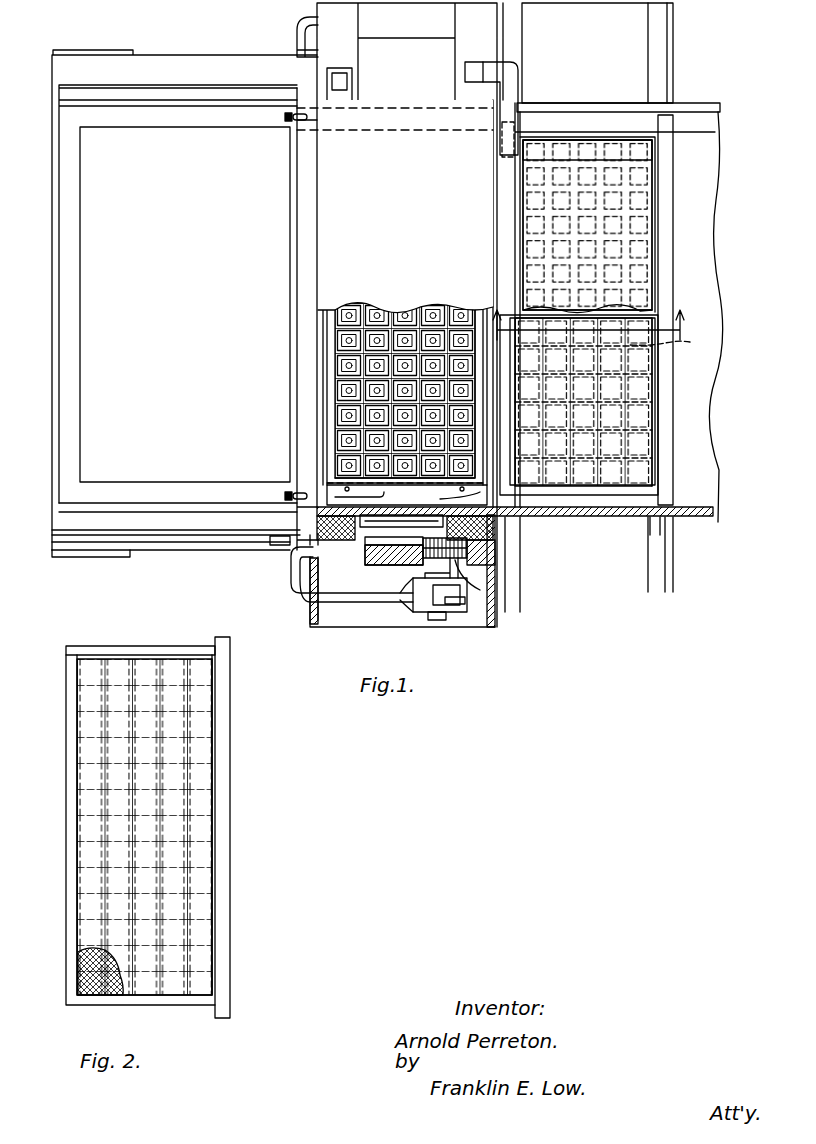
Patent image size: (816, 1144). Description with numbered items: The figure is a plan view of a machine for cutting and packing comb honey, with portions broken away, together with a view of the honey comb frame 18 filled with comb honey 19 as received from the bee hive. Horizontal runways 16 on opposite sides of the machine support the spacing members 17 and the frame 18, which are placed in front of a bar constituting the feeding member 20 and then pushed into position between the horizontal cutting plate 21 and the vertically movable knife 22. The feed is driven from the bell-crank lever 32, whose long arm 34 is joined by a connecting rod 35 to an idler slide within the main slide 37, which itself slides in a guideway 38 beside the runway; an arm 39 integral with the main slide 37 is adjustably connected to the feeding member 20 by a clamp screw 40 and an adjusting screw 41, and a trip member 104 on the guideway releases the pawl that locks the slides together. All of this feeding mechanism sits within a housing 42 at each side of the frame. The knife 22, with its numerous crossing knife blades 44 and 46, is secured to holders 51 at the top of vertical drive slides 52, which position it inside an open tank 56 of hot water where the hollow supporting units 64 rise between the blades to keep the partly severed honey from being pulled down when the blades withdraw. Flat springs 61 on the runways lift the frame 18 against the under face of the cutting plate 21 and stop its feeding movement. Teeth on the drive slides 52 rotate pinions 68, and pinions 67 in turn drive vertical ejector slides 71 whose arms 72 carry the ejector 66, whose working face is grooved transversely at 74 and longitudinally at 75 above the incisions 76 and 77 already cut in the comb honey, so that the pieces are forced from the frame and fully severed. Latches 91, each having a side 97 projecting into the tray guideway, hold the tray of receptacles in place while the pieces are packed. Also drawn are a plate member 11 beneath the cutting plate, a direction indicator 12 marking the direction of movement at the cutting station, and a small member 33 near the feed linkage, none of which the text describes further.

In FIG. 1, the plate 11 is at (492, 548).
In FIG. 1, the air flow direction 12 is at (604, 326).
In FIG. 1, the horizontal runways 16 is at (218, 133).
In FIG. 1, the spacing members 17 is at (515, 502).
In FIG. 1, the honey comb frame 18 is at (665, 365).
In FIG. 2, the honey comb frame 18 is at (220, 812).
In FIG. 1, the comb honey 19 is at (640, 418).
In FIG. 2, the comb honey 19 is at (85, 825).
In FIG. 1, the feeding member 20 is at (305, 281).
In FIG. 1, the cutting plate 21 is at (340, 240).
In FIG. 1, the knife 22 is at (364, 390).
In FIG. 1, the bell-crank lever 32 is at (470, 594).
In FIG. 1, the valve member 33 is at (462, 606).
In FIG. 1, the arm of bell-crank lever 34 is at (447, 605).
In FIG. 1, the connecting rod 35 is at (300, 30).
In FIG. 1, the main slide 37 is at (275, 543).
In FIG. 1, the guideway 38 is at (196, 542).
In FIG. 1, the arm of main slide 39 is at (297, 92).
In FIG. 1, the clamp screw 40 is at (296, 120).
In FIG. 1, the adjusting screw 41 is at (283, 117).
In FIG. 1, the housing 42 is at (308, 656).
In FIG. 1, the knife blades 44 is at (364, 390).
In FIG. 1, the knife blades 46 is at (347, 418).
In FIG. 1, the holders 51 is at (466, 496).
In FIG. 1, the vertical drive slides 52 is at (400, 548).
In FIG. 1, the open tank 56 is at (325, 363).
In FIG. 1, the flat springs 61 is at (403, 498).
In FIG. 1, the hollow supporting units 64 is at (345, 388).
In FIG. 1, the ejector 66 is at (655, 232).
In FIG. 1, the pinions 67 is at (480, 562).
In FIG. 1, the pinions 68 is at (468, 552).
In FIG. 1, the vertical ejector slides 71 is at (485, 60).
In FIG. 1, the arm 72 is at (510, 92).
In FIG. 1, the transverse grooves 74 is at (619, 226).
In FIG. 1, the longitudinal grooves 75 is at (640, 256).
In FIG. 1, the incisions 76 is at (692, 345).
In FIG. 1, the incisions 77 is at (630, 392).
In FIG. 1, the latches 91 is at (500, 532).
In FIG. 1, the side of latch 97 is at (655, 520).
In FIG. 1, the trip member 104 is at (97, 557).